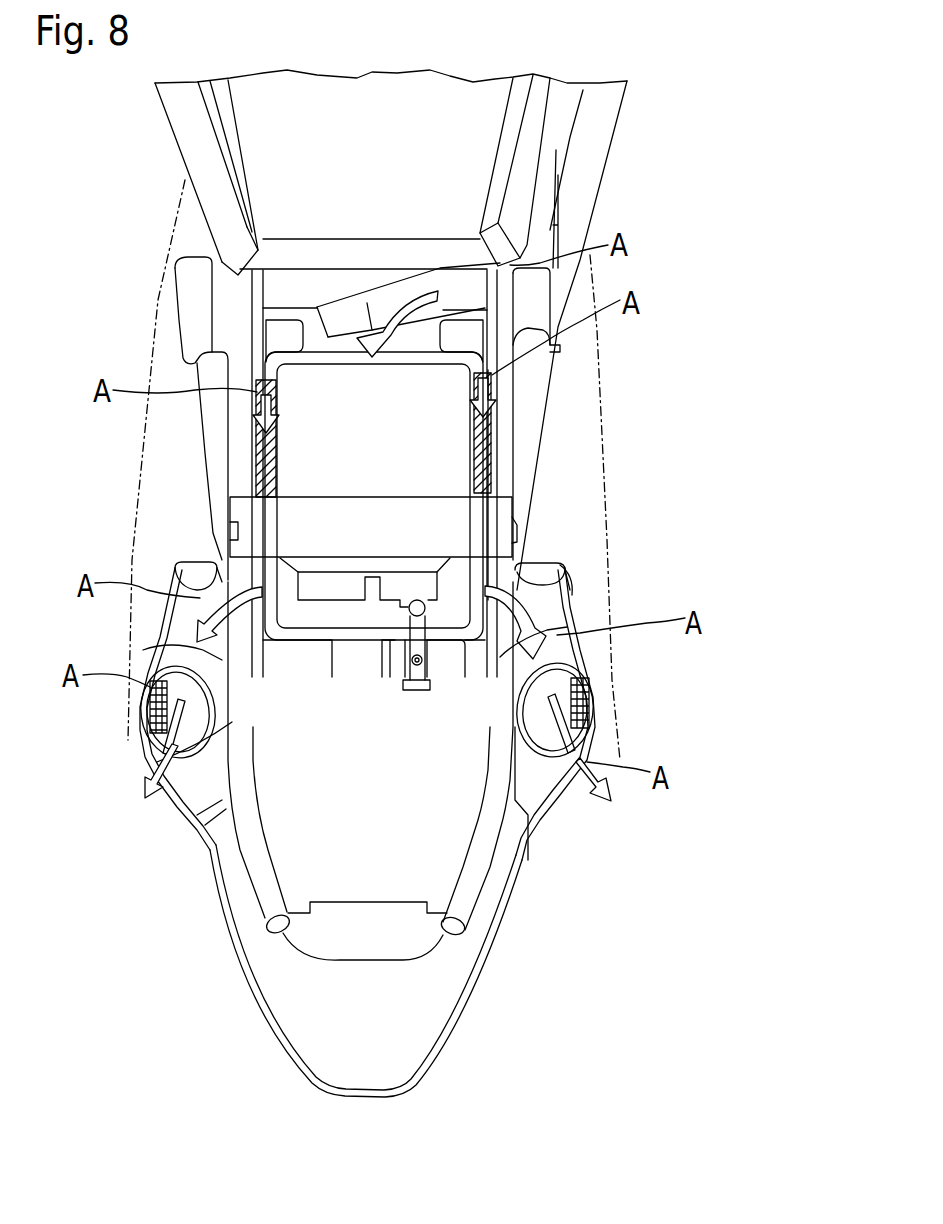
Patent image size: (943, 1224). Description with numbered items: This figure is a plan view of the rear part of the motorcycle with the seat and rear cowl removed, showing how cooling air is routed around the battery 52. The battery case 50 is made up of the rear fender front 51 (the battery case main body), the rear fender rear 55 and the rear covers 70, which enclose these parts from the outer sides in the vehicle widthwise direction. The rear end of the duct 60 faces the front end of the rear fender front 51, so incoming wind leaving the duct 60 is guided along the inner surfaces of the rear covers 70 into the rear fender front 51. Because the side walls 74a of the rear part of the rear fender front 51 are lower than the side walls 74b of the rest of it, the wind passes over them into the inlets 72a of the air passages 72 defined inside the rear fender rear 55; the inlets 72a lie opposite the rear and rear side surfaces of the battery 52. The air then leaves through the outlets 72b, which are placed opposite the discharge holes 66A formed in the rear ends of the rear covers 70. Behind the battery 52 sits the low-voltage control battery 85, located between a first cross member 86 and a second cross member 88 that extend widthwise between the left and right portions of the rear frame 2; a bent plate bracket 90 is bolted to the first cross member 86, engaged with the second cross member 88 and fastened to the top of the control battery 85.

The rear frame 2 is at (248, 836).
The battery case 50 is at (485, 420).
The rear fender front 51 is at (489, 460).
The battery 52 is at (300, 428).
The rear fender rear 55 is at (263, 973).
The duct 60 is at (597, 171).
The discharge holes 66A is at (170, 710).
The rear covers 70 is at (147, 373).
The air passages 72 is at (183, 613).
The inlets 72a is at (197, 556).
The outlets 72b is at (143, 753).
The side walls 74a is at (517, 560).
The side walls 74b is at (488, 390).
The control battery 85 is at (453, 660).
The first cross member 86 is at (232, 520).
The second cross member 88 is at (183, 797).
The bracket 90 is at (570, 588).